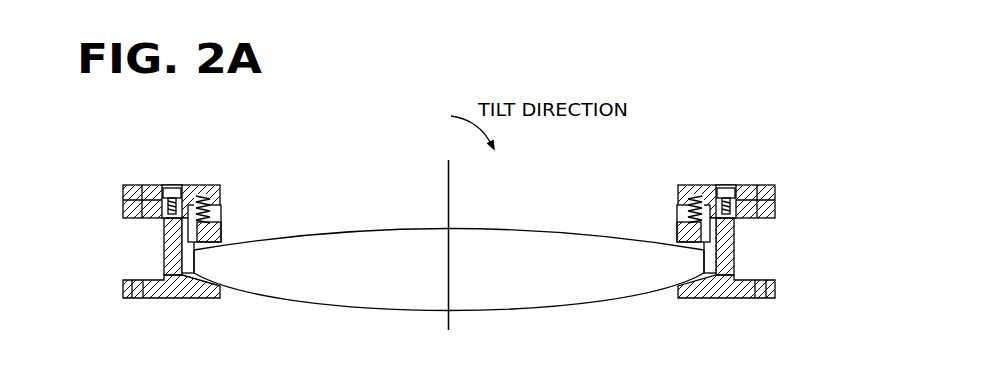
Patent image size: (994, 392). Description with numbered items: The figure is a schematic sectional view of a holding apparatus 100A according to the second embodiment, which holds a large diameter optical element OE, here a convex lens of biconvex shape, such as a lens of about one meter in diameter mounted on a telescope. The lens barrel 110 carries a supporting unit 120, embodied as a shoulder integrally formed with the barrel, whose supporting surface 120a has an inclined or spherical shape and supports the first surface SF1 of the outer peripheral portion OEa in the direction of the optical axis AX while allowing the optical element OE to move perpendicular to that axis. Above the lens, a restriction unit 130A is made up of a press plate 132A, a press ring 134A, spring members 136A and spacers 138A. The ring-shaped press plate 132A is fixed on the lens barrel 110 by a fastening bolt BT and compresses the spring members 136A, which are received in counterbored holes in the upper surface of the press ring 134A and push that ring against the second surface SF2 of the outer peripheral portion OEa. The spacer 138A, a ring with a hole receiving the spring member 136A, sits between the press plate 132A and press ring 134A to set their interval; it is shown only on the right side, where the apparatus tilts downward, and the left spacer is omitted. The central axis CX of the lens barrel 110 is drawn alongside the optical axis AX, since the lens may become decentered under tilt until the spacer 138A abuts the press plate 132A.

The holding apparatus 100A is at (430, 78).
The lens barrel 110 is at (163, 255).
The supporting unit 120 is at (170, 297).
The supporting surface 120a is at (197, 273).
The restriction unit 130A is at (770, 175).
The press plate 132A is at (690, 186).
The press ring 134A is at (680, 230).
The spring member 136A is at (730, 232).
The spacer 138A is at (682, 197).
The fastening bolt BT is at (727, 187).
The central axis CX is at (447, 178).
The optical axis AX is at (450, 215).
The optical element OE is at (536, 300).
The outer peripheral portion OEa is at (287, 318).
The first surface SF1 is at (268, 298).
The second surface SF2 is at (282, 237).